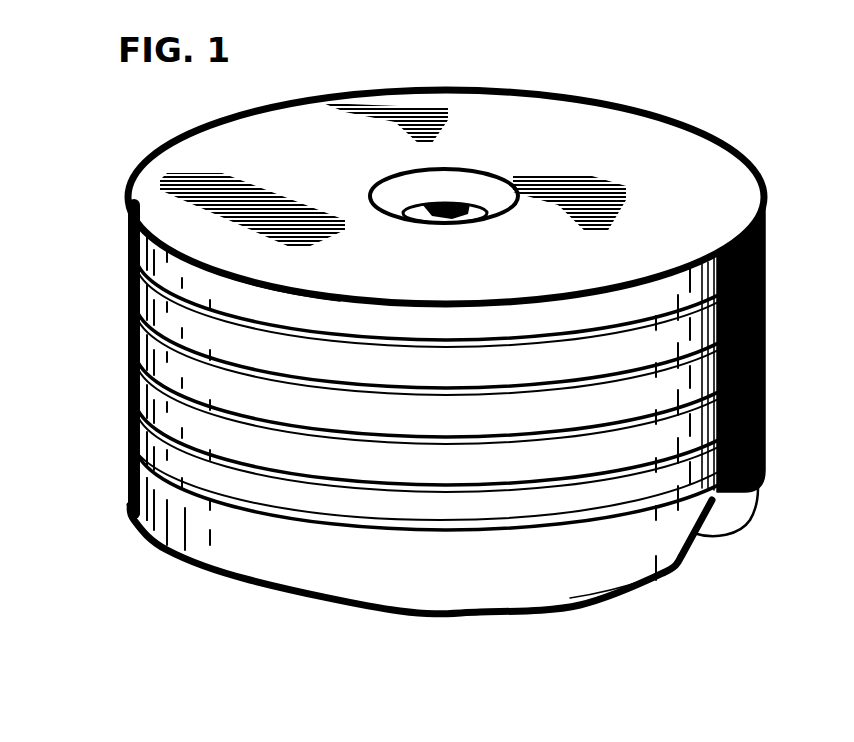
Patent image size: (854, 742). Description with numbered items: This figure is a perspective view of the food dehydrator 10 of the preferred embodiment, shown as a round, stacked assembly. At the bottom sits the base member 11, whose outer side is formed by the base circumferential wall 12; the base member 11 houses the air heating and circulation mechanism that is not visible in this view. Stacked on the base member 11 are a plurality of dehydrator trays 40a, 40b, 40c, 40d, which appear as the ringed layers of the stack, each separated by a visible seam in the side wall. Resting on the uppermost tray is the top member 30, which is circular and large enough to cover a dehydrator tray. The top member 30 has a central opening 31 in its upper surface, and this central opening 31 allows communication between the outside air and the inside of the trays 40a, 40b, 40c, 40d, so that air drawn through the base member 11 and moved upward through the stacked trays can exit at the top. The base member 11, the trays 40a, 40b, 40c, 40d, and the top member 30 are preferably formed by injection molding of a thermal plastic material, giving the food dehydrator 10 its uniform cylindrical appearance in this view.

The food dehydrator 10 is at (659, 108).
The top member 30 is at (255, 135).
The central opening 31 is at (446, 200).
The dehydrator tray 40a is at (127, 296).
The dehydrator tray 40b is at (127, 336).
The dehydrator tray 40c is at (127, 386).
The dehydrator tray 40d is at (127, 453).
The base member 11 is at (243, 538).
The base circumferential wall 12 is at (160, 547).